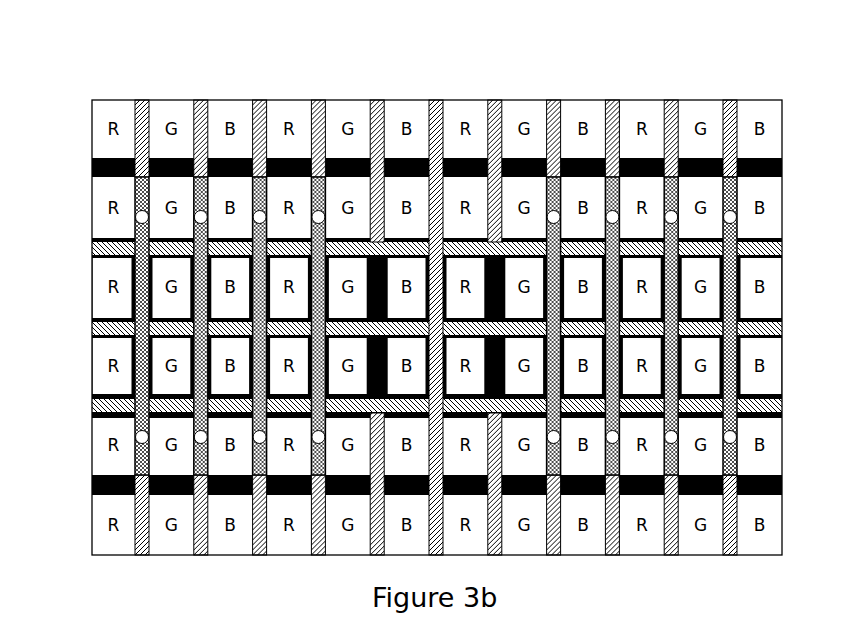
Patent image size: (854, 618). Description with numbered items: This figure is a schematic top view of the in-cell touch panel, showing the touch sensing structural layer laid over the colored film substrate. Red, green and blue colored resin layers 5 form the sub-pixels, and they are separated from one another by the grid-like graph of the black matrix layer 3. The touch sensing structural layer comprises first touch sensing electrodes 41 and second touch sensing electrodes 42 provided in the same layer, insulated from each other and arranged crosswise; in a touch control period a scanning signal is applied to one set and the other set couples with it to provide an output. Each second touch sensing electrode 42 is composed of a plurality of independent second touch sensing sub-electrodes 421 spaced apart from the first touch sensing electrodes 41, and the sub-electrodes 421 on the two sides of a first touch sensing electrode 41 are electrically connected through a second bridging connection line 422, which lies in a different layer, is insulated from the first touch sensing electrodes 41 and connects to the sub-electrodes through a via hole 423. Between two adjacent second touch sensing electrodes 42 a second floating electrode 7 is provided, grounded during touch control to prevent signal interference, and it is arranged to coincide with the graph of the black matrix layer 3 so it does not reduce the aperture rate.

The black matrix layer 3 is at (782, 162).
The colored resin layer 5 is at (772, 303).
The second floating electrode 7 is at (377, 100).
The first touch sensing electrode 41 is at (783, 402).
The second touch sensing electrode 42 is at (122, 180).
The second touch sensing sub-electrode 421 is at (145, 100).
The second bridging connection line 422 is at (132, 303).
The via hole 423 is at (208, 100).